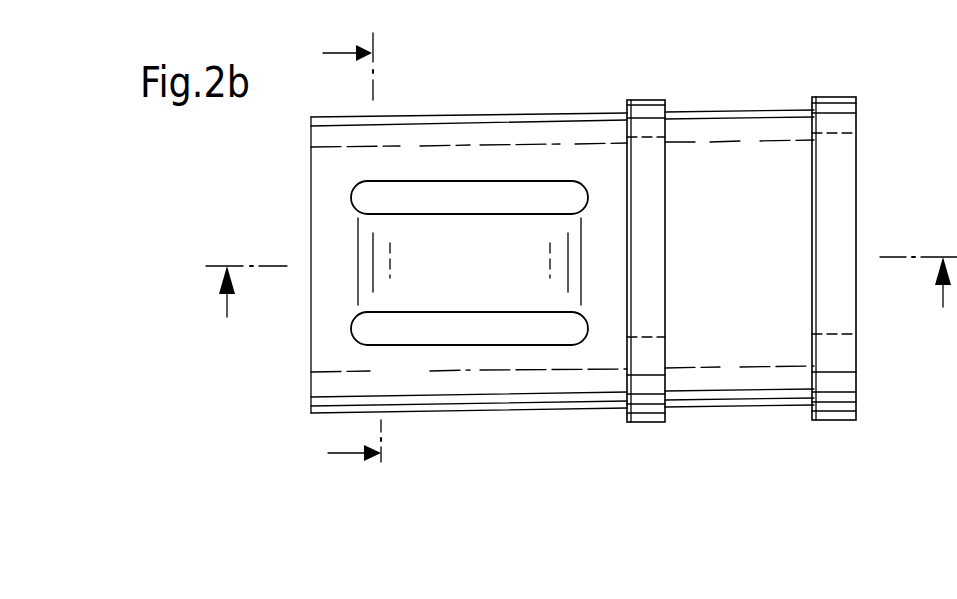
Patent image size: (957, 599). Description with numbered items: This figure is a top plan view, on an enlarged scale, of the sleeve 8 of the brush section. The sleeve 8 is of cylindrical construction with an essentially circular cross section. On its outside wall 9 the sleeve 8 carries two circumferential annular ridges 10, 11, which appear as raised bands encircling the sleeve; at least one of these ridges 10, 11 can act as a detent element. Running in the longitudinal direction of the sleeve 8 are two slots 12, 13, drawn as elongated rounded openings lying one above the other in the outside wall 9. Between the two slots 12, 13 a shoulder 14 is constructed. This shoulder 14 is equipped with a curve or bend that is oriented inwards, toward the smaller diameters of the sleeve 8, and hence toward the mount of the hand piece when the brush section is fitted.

The sleeve 8 is at (880, 98).
The outside wall 9 is at (530, 113).
The annular ridge 10 is at (638, 105).
The annular ridge 11 is at (832, 104).
The slot 12 is at (420, 192).
The slot 13 is at (462, 332).
The shoulder 14 is at (507, 275).